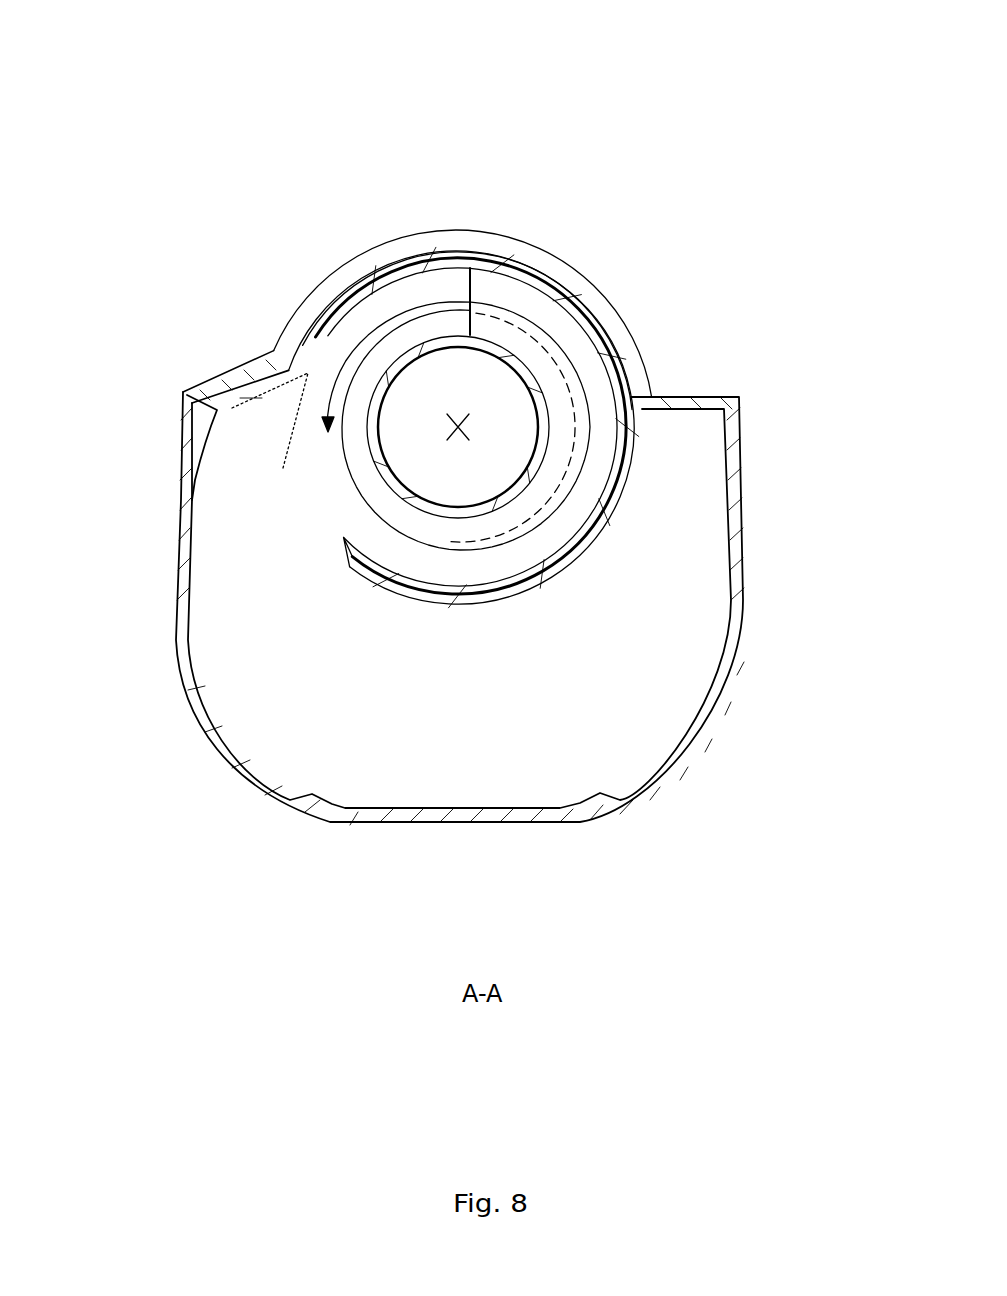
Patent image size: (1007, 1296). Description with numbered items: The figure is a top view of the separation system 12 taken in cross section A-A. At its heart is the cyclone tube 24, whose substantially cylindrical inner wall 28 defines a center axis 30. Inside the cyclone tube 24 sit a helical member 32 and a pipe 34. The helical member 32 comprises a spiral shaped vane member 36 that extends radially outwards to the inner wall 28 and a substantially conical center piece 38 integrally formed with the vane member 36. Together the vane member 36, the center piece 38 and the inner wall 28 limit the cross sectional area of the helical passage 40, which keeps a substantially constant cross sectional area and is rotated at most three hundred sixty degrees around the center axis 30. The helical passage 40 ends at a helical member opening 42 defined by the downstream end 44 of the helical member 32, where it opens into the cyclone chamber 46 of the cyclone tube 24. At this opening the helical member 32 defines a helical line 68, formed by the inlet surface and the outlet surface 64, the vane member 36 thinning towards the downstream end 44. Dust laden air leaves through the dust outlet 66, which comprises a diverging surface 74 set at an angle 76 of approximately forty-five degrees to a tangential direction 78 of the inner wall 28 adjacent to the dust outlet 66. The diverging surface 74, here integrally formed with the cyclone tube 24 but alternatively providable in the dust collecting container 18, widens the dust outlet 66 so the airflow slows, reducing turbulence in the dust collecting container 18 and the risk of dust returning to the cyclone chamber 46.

The separation system 12 is at (220, 66).
The dust collecting container 18 is at (490, 735).
The cyclone tube 24 is at (425, 250).
The inner wall 28 is at (372, 290).
The center axis 30 is at (466, 427).
The helical member 32 is at (593, 375).
The pipe 34 is at (380, 487).
The vane member 36 is at (563, 315).
The center piece 38 is at (425, 421).
The helical passage 40 is at (553, 360).
The helical member opening 42 is at (456, 278).
The downstream end 44 is at (488, 293).
The cyclone chamber 46 is at (518, 557).
The outlet surface 64 is at (520, 300).
The dust outlet 66 is at (309, 494).
The helical line 68 is at (362, 345).
The diverging surface 74 is at (262, 362).
The angle 76 is at (300, 395).
The tangential direction 78 is at (300, 445).